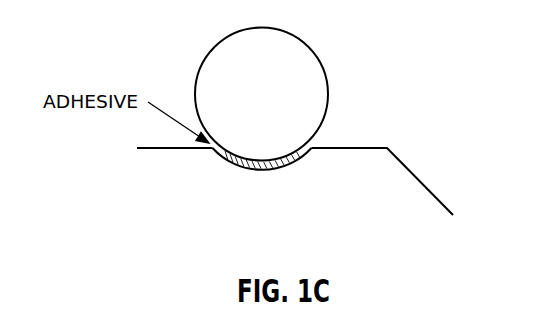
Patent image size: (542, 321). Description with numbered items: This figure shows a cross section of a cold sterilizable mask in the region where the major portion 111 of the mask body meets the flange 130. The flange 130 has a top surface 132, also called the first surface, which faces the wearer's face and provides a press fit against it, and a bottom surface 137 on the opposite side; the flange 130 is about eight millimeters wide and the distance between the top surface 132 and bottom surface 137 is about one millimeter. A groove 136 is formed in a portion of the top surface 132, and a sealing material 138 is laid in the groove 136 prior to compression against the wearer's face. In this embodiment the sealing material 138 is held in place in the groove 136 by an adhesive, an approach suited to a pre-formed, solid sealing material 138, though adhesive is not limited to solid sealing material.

The major portion 111 is at (436, 198).
The flange 130 is at (192, 149).
The top surface 132 is at (375, 147).
The groove 136 is at (265, 172).
The bottom surface 137 is at (375, 153).
The sealing material 138 is at (279, 106).